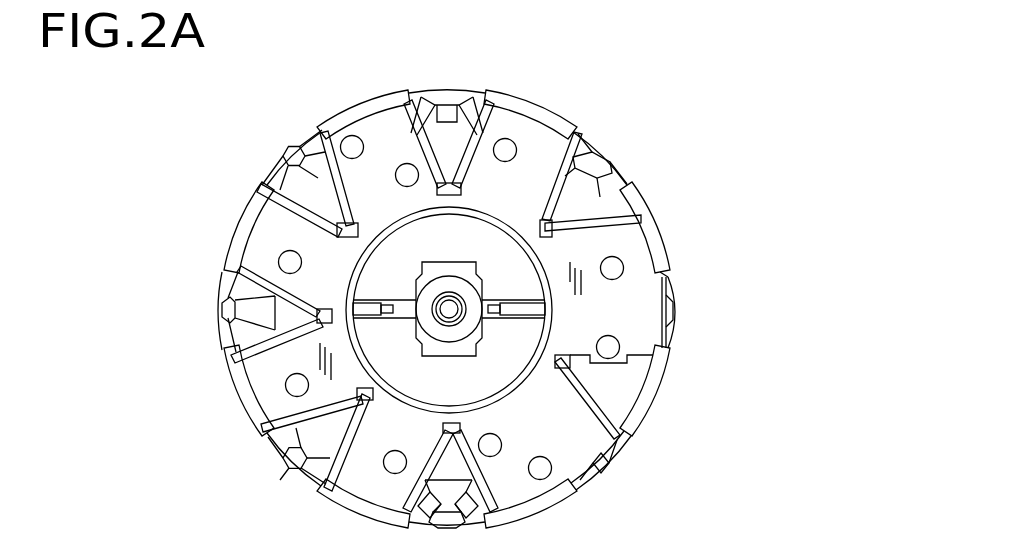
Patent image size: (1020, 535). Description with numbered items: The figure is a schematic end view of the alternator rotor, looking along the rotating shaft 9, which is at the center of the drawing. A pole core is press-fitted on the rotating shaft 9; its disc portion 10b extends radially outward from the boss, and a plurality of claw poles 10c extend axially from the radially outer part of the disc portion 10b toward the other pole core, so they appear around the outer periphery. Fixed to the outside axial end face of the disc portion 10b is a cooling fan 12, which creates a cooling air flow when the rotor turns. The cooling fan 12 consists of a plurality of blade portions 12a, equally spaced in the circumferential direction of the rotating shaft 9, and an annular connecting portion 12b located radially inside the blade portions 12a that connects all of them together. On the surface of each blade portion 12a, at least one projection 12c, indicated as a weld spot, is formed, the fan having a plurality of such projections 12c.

The rotating shaft 9 is at (487, 297).
The disc portion 10b is at (395, 258).
The claw poles 10c is at (444, 125).
The cooling fan 12 is at (546, 113).
The blade portions 12a is at (553, 152).
The annular connecting portion 12b is at (530, 215).
The projections 12c is at (548, 471).